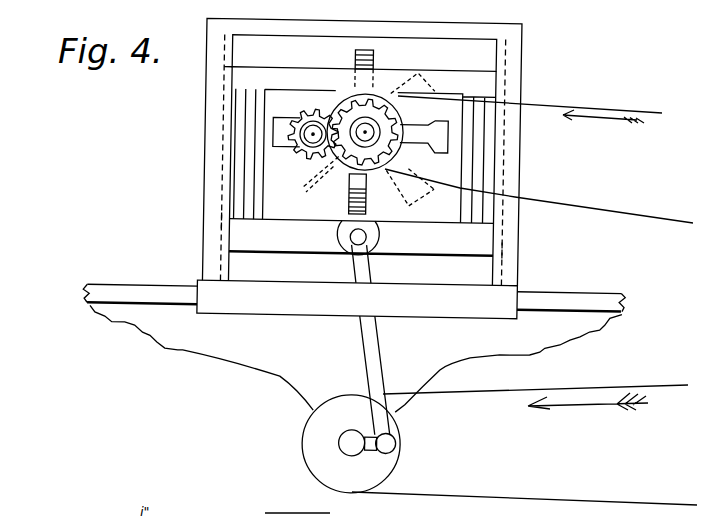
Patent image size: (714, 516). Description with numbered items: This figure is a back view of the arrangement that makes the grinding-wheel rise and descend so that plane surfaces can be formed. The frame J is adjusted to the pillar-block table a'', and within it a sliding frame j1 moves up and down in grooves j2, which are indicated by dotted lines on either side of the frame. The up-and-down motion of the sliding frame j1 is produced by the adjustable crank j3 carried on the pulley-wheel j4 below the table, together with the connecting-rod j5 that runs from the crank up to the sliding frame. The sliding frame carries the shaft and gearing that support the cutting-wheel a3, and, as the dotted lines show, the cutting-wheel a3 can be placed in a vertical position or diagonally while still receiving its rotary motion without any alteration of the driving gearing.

The frame J is at (359, 159).
The pillar-block table a'' is at (353, 350).
The cutting-wheel a3 is at (355, 131).
The sliding frame j1 is at (407, 167).
The grooves j2 is at (352, 237).
The adjustable crank j3 is at (385, 446).
The pulley-wheel j4 is at (351, 444).
The connecting-rod j5 is at (372, 340).